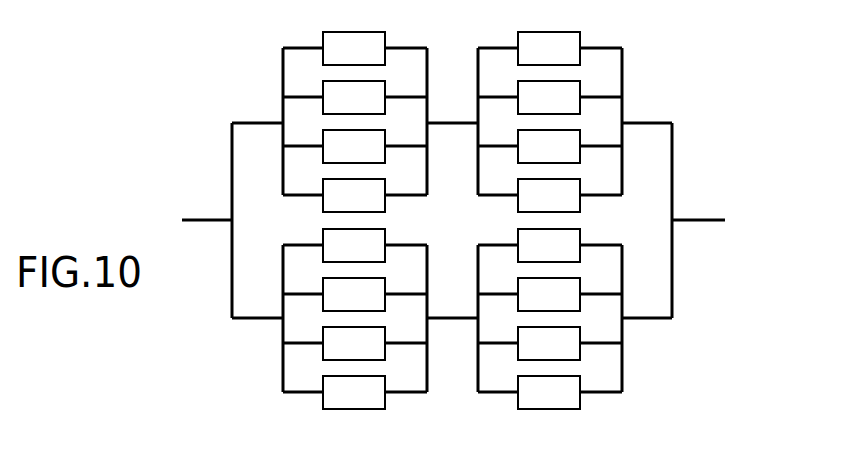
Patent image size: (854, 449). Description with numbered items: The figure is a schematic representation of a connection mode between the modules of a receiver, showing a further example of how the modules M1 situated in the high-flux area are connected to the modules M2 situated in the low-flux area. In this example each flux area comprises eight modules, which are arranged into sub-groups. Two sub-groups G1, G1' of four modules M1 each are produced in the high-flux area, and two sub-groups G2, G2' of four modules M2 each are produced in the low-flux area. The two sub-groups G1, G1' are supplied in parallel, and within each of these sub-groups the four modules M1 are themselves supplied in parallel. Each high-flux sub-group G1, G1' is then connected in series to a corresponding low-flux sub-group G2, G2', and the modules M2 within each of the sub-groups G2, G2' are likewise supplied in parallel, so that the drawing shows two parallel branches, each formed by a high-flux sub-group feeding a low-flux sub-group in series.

The module M1 is at (338, 47).
The module M2 is at (562, 47).
The sub-group G1 is at (297, 121).
The sub-group G1' is at (293, 318).
The sub-group G2 is at (605, 121).
The sub-group G2' is at (608, 318).